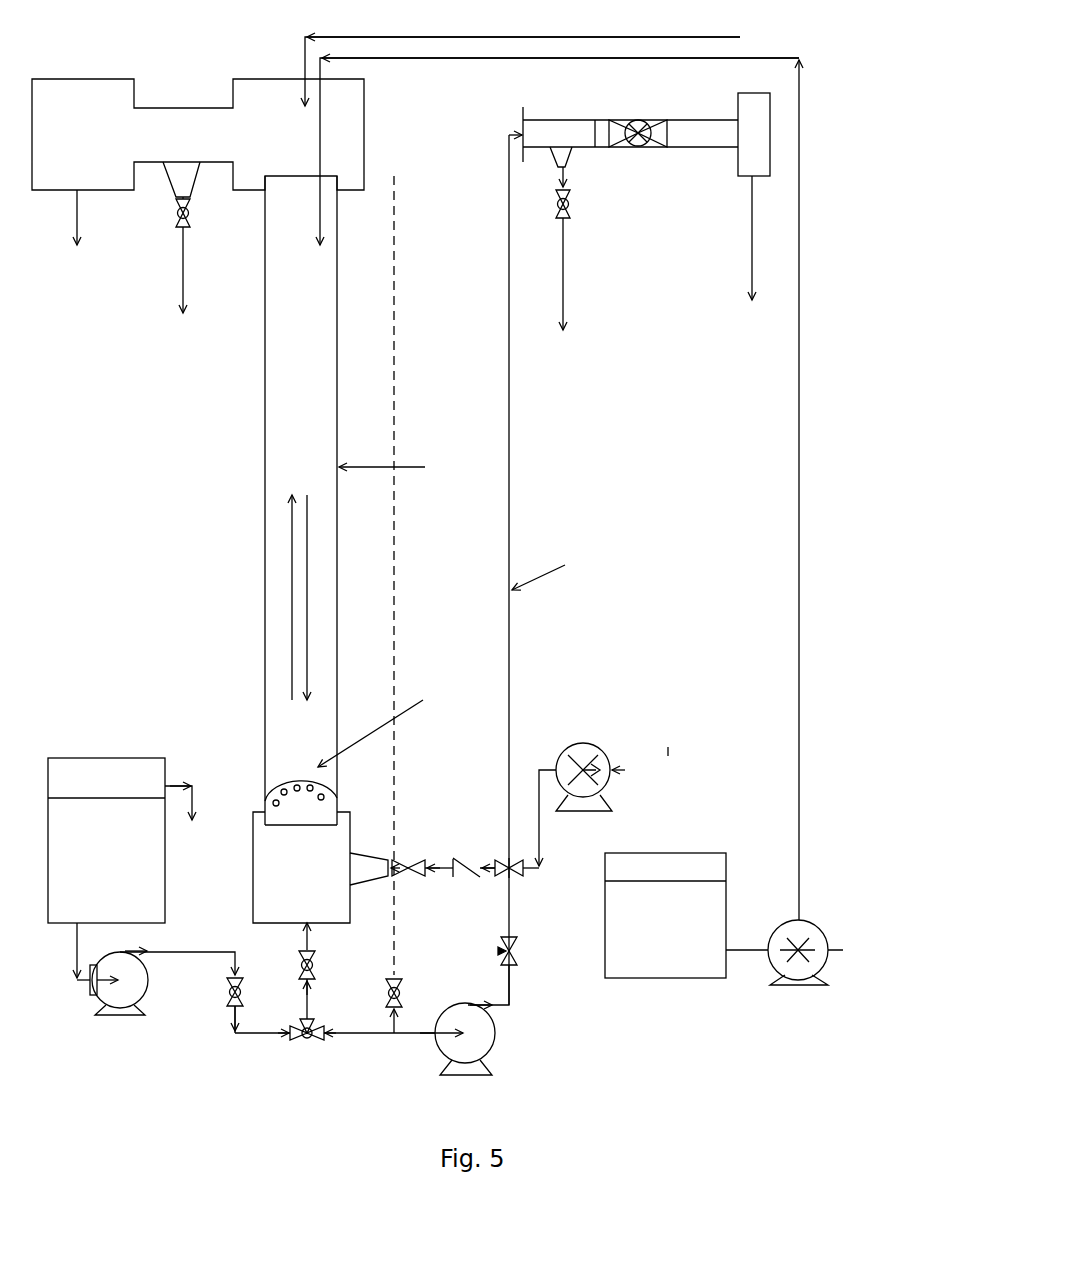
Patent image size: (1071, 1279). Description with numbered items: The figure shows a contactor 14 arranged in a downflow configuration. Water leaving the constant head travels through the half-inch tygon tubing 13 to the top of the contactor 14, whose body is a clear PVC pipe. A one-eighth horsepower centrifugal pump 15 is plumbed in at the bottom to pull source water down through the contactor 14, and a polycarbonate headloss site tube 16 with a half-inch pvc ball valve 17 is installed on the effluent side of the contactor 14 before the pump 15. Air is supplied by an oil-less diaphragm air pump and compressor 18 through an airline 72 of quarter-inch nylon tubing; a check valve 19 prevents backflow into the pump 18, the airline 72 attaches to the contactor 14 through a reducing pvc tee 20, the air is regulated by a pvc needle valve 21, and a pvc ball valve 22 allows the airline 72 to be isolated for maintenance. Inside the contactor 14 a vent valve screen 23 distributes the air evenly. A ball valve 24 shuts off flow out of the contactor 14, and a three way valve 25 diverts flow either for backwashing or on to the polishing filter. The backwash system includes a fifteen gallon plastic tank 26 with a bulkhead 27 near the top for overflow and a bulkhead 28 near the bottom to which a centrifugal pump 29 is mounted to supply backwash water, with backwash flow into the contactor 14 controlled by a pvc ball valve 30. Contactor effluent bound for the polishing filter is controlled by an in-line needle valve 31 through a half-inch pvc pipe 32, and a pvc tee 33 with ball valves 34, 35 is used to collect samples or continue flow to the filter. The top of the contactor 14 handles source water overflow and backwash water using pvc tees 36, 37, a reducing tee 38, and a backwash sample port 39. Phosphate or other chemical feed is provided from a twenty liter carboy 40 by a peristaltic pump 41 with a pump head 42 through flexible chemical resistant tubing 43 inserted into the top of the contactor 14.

The tygon tubing 13 is at (550, 36).
The contactor 14 is at (745, 265).
The centrifugal pump 15 is at (498, 1040).
The headloss site tube 16 is at (397, 757).
The pvc ball valve 17 is at (384, 991).
The air pump 18 is at (596, 745).
The check valve 19 is at (453, 853).
The reducing pvc tee 20 is at (264, 866).
The pvc needle valve 21 is at (499, 876).
The pvc ball valve 22 is at (408, 855).
The vent valve screen 23 is at (321, 783).
The ball valve 24 is at (318, 962).
The three way valve 25 is at (313, 1041).
The plastic tank 26 is at (160, 848).
The bulkhead 27 is at (166, 776).
The bulkhead 28 is at (76, 923).
The centrifugal pump 29 is at (91, 992).
The pvc ball valve 30 is at (228, 1000).
The in-line needle valve 31 is at (521, 953).
The pvc pipe 32 is at (512, 516).
The pvc tee 33 is at (550, 118).
The ball valve 34 is at (553, 201).
The ball valve 35 is at (631, 150).
The pvc tee 36 is at (367, 120).
The pvc tee 37 is at (105, 78).
The reducing tee 38 is at (165, 172).
The backwash sample port 39 is at (178, 206).
The carboy 40 is at (667, 851).
The peristaltic pump 41 is at (807, 921).
The pump head 42 is at (803, 965).
The flexible chemical resistant tubing 43 is at (801, 812).
The airline 72 is at (551, 838).